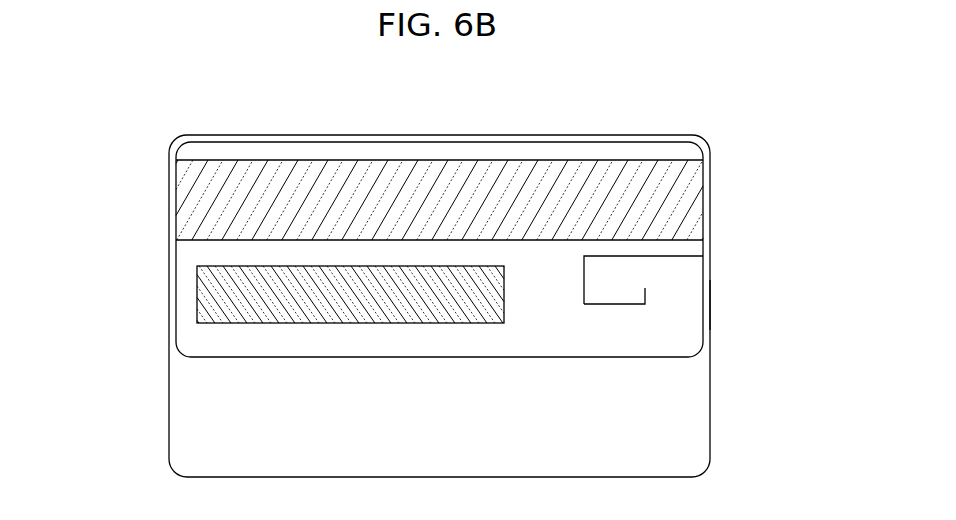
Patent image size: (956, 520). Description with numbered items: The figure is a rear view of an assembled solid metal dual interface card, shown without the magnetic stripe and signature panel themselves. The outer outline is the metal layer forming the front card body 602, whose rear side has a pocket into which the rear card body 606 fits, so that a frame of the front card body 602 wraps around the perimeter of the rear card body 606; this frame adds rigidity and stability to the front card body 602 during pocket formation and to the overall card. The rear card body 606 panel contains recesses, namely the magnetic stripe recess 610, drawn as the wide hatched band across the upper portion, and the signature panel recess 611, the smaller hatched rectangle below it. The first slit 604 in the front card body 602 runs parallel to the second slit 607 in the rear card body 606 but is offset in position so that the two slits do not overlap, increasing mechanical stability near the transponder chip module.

The front card body 602 is at (672, 423).
The first slit 604 is at (712, 301).
The rear card body 606 is at (296, 152).
The second slit 607 is at (692, 254).
The magnetic stripe recess 610 is at (230, 204).
The signature panel recess 611 is at (234, 287).